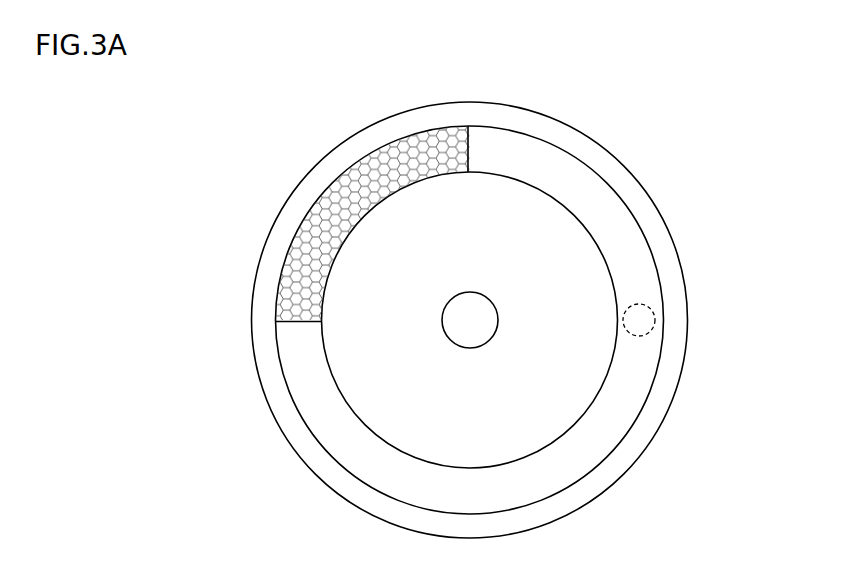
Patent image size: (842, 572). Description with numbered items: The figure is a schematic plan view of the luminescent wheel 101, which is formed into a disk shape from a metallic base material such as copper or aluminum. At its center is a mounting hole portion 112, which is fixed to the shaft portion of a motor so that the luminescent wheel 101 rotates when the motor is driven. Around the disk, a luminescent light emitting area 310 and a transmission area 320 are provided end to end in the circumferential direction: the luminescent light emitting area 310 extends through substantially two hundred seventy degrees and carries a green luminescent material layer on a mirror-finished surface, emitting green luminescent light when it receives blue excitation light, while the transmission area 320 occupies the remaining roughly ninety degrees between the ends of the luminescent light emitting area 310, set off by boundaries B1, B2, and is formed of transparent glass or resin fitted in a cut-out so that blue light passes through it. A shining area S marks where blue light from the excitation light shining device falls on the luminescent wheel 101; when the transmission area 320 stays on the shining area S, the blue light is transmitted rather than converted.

The luminescent wheel 101 is at (605, 87).
The mounting hole portion 112 is at (488, 302).
The luminescent light emitting area 310 is at (669, 271).
The transmission area 320 is at (293, 212).
The boundary B1 is at (293, 317).
The boundary B2 is at (462, 136).
The shining area S is at (655, 333).